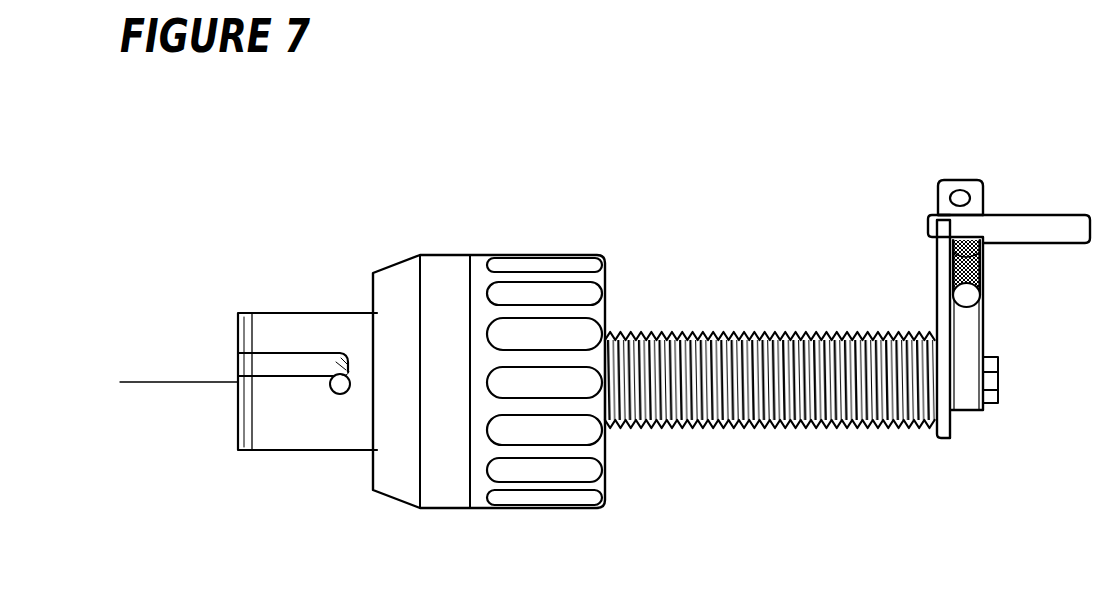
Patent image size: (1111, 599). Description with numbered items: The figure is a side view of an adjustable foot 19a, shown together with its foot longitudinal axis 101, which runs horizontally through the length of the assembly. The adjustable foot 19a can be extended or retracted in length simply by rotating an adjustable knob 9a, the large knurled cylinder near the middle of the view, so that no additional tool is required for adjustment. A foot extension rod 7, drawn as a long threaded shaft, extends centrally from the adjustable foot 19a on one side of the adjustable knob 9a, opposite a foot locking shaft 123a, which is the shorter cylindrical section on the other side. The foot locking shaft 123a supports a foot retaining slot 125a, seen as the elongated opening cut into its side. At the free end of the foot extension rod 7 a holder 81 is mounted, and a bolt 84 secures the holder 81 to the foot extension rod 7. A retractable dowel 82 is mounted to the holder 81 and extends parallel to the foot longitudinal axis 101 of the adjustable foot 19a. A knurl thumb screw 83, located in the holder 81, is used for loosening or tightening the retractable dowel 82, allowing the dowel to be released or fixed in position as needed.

The adjustable foot 19a is at (228, 136).
The foot longitudinal axis 101 is at (178, 382).
The foot locking shaft 123a is at (309, 452).
The foot retaining slot 125a is at (284, 364).
The adjustable knob 9a is at (478, 512).
The foot extension rod 7 is at (763, 428).
The holder 81 is at (935, 268).
The retractable dowel 82 is at (1032, 220).
The knurl thumb screw 83 is at (982, 254).
The bolt 84 is at (999, 387).